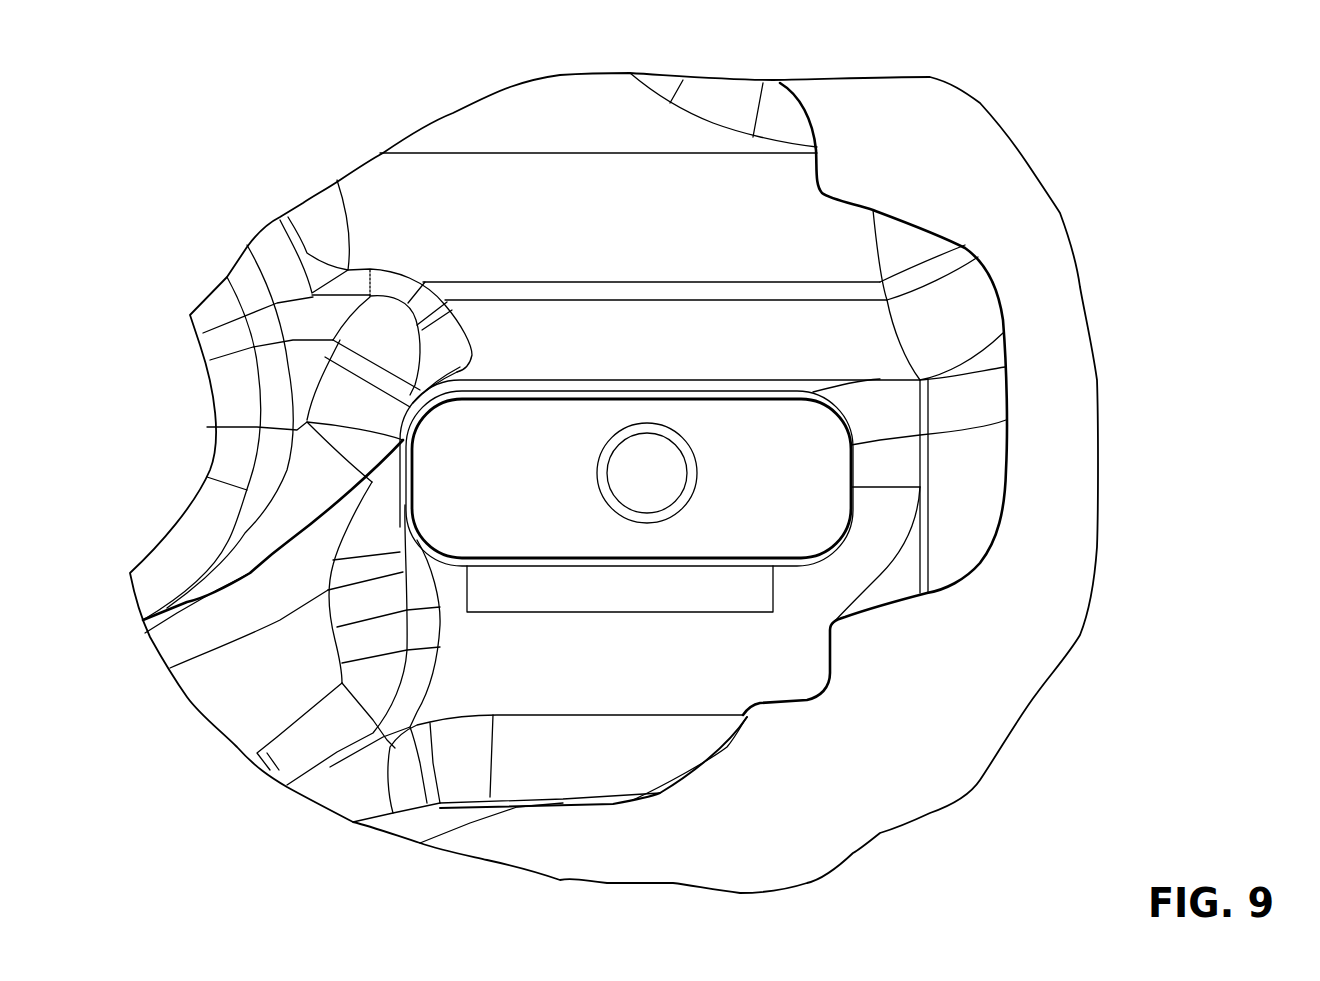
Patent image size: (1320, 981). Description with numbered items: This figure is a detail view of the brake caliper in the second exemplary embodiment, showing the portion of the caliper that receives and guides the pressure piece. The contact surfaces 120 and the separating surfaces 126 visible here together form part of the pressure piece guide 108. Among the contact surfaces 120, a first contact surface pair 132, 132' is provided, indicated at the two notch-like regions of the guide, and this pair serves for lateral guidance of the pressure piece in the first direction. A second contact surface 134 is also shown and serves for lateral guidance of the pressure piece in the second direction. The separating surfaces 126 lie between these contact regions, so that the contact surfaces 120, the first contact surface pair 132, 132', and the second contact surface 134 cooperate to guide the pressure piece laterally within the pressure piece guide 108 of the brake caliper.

The pressure piece guide 108 is at (1097, 328).
The contact surfaces 120 is at (851, 201).
The separating surfaces 126 is at (981, 257).
The second contact surface 134 is at (1007, 427).
The first contact surface pair 132 is at (845, 107).
The first contact surface pair 132' is at (889, 736).